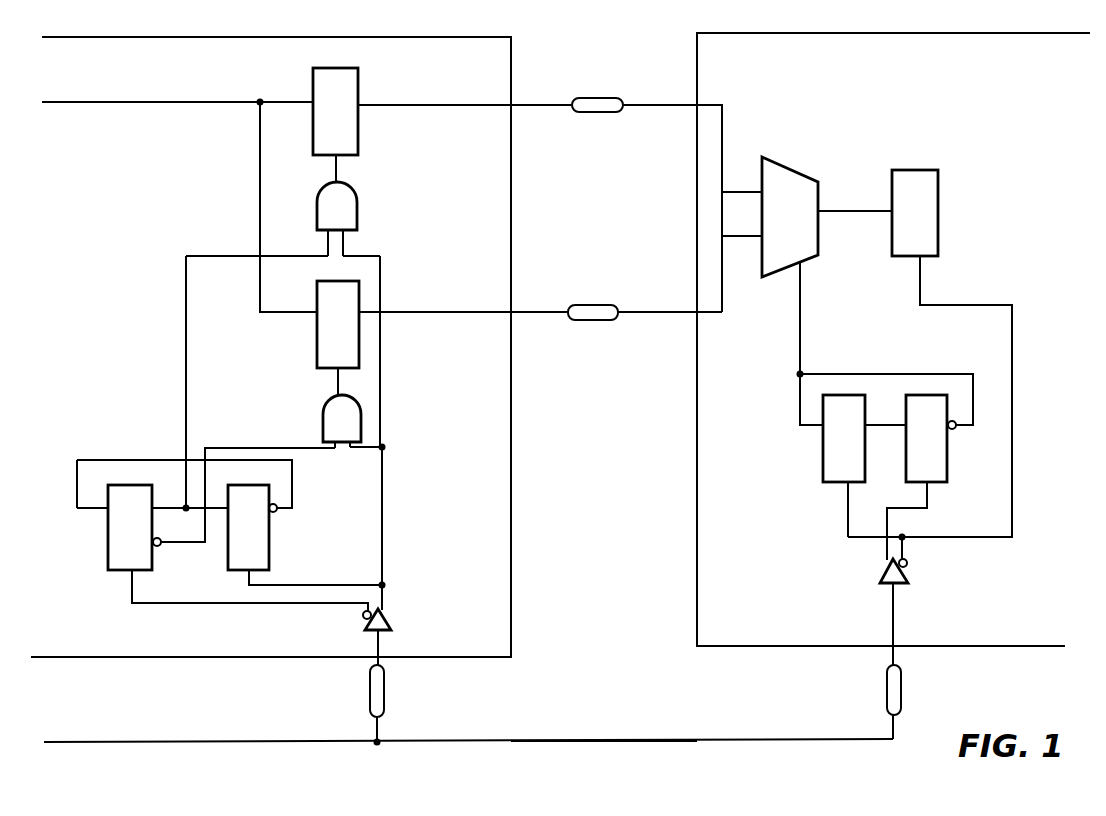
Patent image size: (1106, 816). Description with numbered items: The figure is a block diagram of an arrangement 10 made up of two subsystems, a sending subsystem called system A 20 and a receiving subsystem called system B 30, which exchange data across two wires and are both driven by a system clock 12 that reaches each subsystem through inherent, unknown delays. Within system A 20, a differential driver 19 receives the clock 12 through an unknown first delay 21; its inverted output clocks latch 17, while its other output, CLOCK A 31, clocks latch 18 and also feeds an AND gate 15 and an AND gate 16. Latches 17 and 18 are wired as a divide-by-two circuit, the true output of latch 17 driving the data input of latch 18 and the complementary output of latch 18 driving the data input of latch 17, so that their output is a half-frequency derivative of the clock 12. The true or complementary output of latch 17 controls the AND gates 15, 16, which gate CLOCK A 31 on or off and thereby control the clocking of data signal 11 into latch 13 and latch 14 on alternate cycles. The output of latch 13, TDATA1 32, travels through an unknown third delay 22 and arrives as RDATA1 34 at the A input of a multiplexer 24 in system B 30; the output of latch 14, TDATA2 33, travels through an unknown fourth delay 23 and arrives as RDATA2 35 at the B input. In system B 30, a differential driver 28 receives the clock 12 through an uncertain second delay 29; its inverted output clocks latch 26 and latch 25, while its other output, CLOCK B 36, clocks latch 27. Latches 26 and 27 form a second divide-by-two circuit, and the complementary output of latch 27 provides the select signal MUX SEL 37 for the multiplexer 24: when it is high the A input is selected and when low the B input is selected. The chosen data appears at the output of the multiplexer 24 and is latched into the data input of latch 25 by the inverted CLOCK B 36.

The arrangement 10 is at (604, 754).
The data signal 11 is at (115, 80).
The system clock 12 is at (132, 734).
The latch 13 is at (335, 125).
The latch 14 is at (338, 338).
The AND gate 15 is at (337, 219).
The AND gate 16 is at (342, 421).
The latch 17 is at (108, 567).
The latch 18 is at (270, 553).
The differential driver 19 is at (390, 621).
The system A 20 is at (283, 37).
The delay D1 21 is at (384, 713).
The delay D3 22 is at (598, 98).
The delay D4 23 is at (593, 304).
The multiplexer 24 is at (806, 160).
The latch 25 is at (930, 353).
The latch 26 is at (864, 466).
The latch 27 is at (921, 477).
The differential driver 28 is at (912, 583).
The delay D2 29 is at (887, 689).
The system B 30 is at (922, 33).
The CLOCK A 31 is at (322, 580).
The TDATA1 32 is at (425, 96).
The TDATA2 33 is at (450, 300).
The RDATA1 34 is at (664, 96).
The RDATA2 35 is at (656, 302).
The CLOCK B 36 is at (889, 494).
The MUX SEL 37 is at (860, 300).